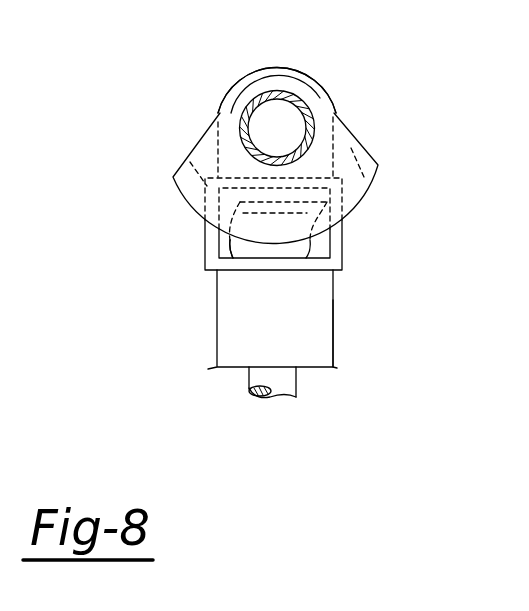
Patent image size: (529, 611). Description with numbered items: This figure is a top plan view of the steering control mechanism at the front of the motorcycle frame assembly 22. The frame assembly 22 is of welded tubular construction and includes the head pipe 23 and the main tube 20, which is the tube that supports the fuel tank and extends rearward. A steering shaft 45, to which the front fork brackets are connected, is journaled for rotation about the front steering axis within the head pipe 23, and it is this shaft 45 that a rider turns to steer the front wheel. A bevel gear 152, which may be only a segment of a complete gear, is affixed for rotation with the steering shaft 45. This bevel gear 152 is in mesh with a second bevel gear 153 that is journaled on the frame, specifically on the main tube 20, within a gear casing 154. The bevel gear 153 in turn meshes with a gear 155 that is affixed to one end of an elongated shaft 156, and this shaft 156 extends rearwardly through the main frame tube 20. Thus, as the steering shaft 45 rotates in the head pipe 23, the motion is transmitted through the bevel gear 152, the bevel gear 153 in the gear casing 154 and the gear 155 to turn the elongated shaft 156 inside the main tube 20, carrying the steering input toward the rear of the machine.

The main tube 20 is at (323, 357).
The frame assembly 22 is at (337, 328).
The head pipe 23 is at (300, 72).
The steering shaft 45 is at (305, 97).
The bevel gear 152 is at (377, 163).
The bevel gear 153 is at (220, 252).
The gear casing 154 is at (333, 258).
The gear 155 is at (330, 212).
The elongated shaft 156 is at (248, 373).